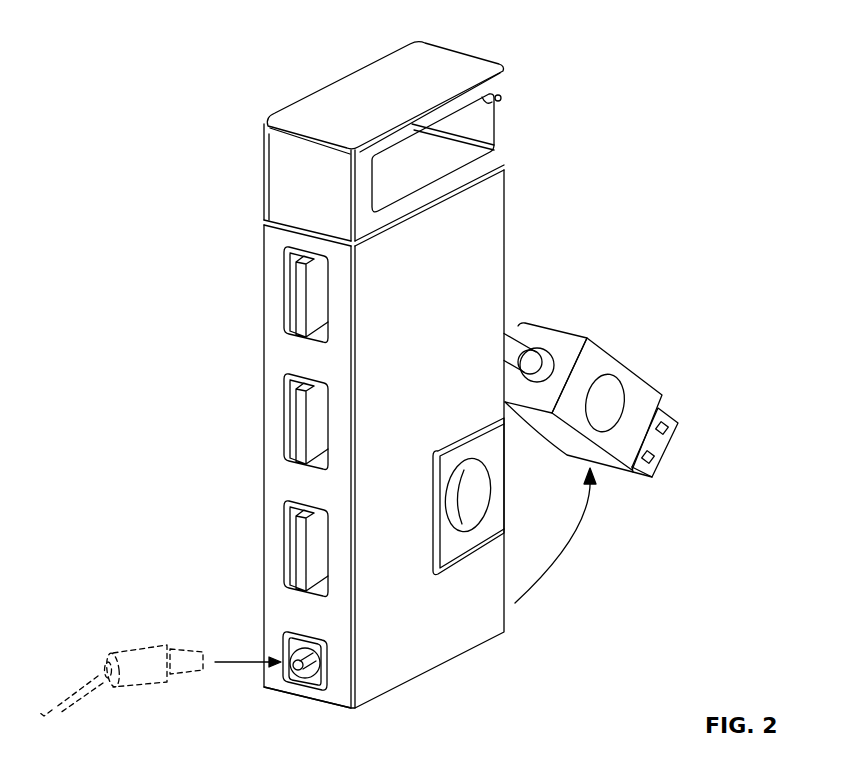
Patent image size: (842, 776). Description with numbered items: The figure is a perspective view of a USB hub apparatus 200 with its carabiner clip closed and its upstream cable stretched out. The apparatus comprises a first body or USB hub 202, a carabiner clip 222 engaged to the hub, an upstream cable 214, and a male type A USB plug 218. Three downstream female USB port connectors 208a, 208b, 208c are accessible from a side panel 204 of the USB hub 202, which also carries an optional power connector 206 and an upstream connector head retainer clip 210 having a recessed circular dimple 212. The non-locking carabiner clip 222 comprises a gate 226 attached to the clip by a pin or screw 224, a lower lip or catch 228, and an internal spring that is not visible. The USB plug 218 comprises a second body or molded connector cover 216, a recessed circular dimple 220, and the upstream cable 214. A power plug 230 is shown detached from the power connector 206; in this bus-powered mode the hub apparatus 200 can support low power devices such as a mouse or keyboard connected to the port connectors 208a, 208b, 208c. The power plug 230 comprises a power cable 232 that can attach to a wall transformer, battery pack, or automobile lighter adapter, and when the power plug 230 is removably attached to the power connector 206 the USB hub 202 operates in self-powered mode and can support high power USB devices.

The USB hub apparatus 200 is at (366, 383).
The USB hub 202 is at (377, 687).
The side panel 204 is at (336, 708).
The power connector 206 is at (296, 666).
The downstream port connector 208a is at (285, 548).
The downstream port connector 208b is at (285, 420).
The downstream port connector 208c is at (285, 290).
The upstream connector head retainer clip 210 is at (445, 555).
The dimple 212 is at (485, 485).
The upstream cable 214 is at (510, 332).
The molded connector cover 216 is at (634, 385).
The USB plug 218 is at (676, 432).
The dimple 220 is at (633, 474).
The carabiner clip 222 is at (458, 60).
The pin 224 is at (502, 98).
The gate 226 is at (497, 119).
The catch 228 is at (497, 151).
The power plug 230 is at (172, 688).
The power cable 232 is at (83, 668).